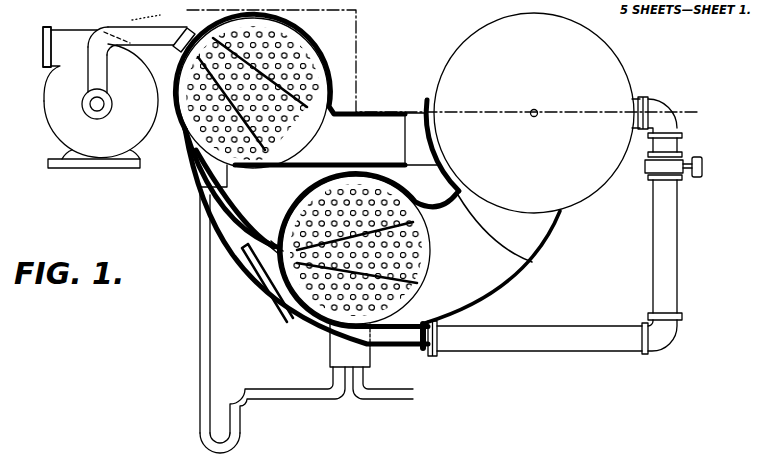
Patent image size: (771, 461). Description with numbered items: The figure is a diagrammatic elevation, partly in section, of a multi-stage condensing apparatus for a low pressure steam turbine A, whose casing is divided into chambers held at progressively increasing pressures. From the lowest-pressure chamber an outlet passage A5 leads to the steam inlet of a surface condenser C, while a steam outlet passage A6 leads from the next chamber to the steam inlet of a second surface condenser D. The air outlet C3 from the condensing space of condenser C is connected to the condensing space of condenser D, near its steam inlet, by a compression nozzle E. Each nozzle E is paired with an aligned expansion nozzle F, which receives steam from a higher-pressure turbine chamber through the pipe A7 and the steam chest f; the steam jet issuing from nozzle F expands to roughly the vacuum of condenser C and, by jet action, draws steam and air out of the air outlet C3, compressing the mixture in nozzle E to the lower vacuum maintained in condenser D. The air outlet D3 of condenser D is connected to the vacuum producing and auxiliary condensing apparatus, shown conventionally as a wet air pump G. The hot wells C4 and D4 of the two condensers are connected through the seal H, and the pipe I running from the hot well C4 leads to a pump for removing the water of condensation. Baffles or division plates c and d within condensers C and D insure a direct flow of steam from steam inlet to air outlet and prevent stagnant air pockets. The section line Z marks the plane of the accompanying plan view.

The low pressure steam turbine A is at (537, 113).
The outlet passage A5 is at (492, 259).
The steam outlet passage A6 is at (337, 139).
The pipe A7 is at (677, 213).
The surface condenser C is at (410, 181).
The air outlet C3 is at (277, 243).
The hot well C4 is at (330, 358).
The baffles or division plates c is at (402, 273).
The surface condenser D is at (327, 70).
The air outlet D3 is at (184, 48).
The hot well D4 is at (190, 176).
The baffles or division plates d is at (223, 82).
The compression nozzle E is at (232, 221).
The expansion nozzle F is at (251, 272).
The wet air pump G is at (100, 97).
The seal H is at (278, 398).
The pipe I is at (390, 400).
The steam chest f is at (415, 340).
The section line Z is at (424, 65).